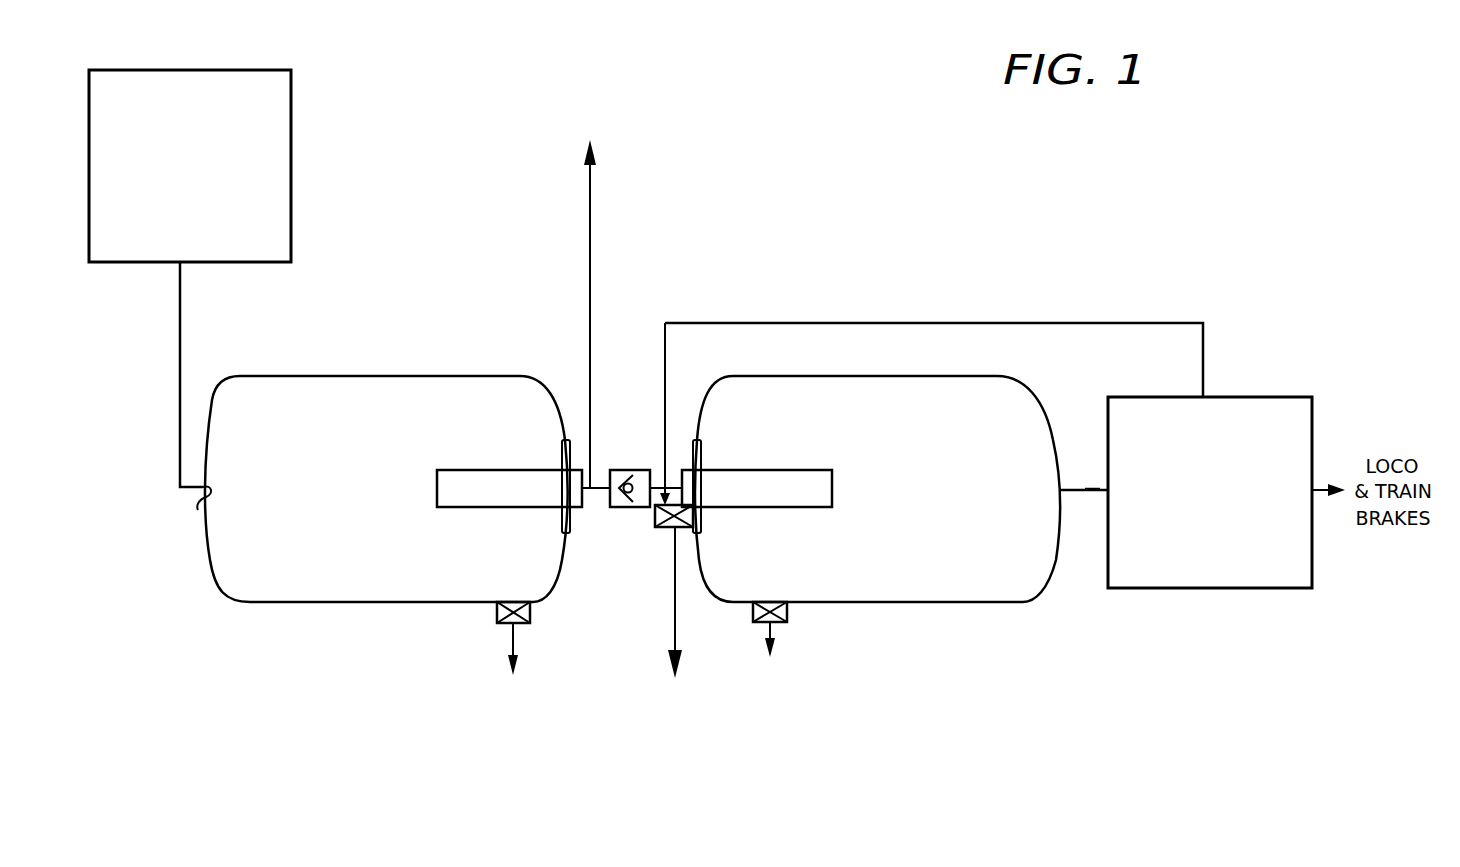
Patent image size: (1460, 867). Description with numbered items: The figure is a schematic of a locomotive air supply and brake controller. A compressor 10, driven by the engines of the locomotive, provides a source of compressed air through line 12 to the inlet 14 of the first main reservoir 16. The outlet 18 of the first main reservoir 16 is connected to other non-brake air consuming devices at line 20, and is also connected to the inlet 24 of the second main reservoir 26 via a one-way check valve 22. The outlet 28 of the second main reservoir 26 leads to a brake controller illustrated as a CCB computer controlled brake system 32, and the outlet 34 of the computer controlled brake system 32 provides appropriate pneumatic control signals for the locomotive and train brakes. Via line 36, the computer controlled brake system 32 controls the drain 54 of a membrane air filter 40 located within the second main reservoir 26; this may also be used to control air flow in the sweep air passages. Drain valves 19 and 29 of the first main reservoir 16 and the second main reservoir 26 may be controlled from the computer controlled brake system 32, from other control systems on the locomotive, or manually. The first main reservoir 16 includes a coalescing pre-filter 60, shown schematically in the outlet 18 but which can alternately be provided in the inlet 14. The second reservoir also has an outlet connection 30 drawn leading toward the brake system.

The compressor 10 is at (291, 95).
The line 12 is at (182, 343).
The inlet 14 is at (200, 508).
The first main reservoir 16 is at (255, 600).
The outlet 18 is at (572, 508).
The drain valve 19 is at (528, 620).
The line 20 is at (593, 258).
The one-way check valve 22 is at (633, 508).
The inlet 24 is at (680, 470).
The second main reservoir 26 is at (962, 587).
The outlet 28 is at (1062, 491).
The drain valve 29 is at (790, 608).
The outlet of second main reservoir 30 is at (1093, 487).
The computer controlled brake system 32 is at (1217, 588).
The outlet 34 is at (1320, 487).
The line 36 is at (1113, 323).
The membrane air filter 40 is at (795, 468).
The drain 54 is at (672, 528).
The coalescing pre-filter 60 is at (447, 468).